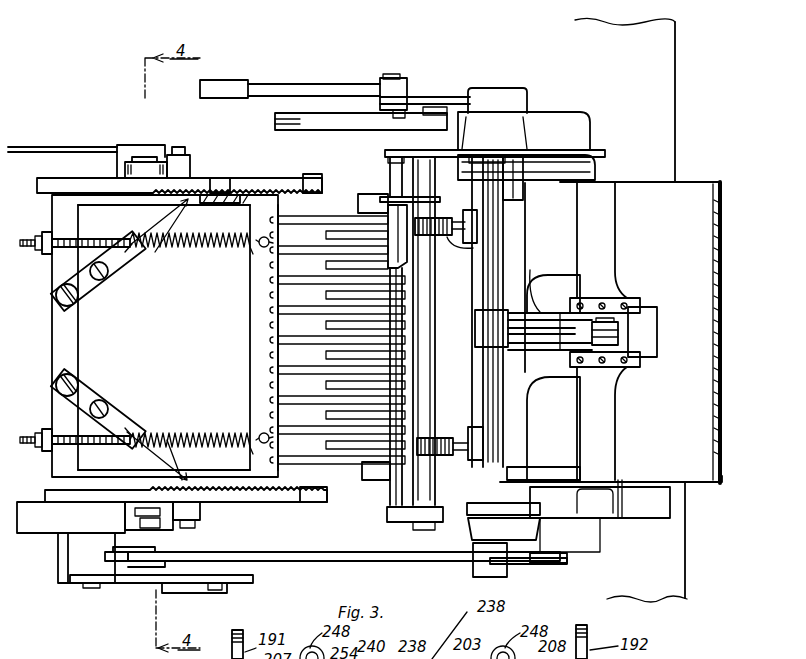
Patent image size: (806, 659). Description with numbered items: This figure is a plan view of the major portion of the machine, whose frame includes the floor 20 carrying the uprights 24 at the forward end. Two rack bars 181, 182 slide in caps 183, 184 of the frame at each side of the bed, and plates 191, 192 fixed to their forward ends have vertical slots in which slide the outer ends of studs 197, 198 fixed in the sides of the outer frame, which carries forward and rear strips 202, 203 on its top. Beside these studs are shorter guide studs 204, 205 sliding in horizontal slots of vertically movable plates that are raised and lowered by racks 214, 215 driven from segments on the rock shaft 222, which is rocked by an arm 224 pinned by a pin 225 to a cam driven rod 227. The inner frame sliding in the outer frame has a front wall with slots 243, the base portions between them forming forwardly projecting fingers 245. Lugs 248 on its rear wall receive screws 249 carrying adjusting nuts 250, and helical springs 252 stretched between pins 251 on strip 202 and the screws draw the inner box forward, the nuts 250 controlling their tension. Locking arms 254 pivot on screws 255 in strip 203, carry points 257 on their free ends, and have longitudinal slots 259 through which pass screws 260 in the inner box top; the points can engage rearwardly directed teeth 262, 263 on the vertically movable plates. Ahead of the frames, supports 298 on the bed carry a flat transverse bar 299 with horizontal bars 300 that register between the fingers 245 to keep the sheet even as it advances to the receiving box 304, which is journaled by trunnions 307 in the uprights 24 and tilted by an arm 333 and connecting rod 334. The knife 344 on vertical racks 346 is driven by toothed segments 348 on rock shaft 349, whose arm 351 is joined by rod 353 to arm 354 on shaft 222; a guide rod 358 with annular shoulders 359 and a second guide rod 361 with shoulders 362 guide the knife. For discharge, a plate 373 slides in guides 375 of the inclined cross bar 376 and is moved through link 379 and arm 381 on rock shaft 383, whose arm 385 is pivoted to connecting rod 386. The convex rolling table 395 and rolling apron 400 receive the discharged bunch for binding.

The floor 20 is at (668, 96).
The uprights 24 is at (553, 150).
The rack bar 181 is at (128, 155).
The rack bar 182 is at (135, 566).
The cap 183 is at (46, 124).
The cap 184 is at (58, 540).
The plate 191 is at (133, 512).
The plate 192 is at (127, 166).
The stud 197 is at (153, 527).
The stud 198 is at (143, 157).
The forward strip 202 is at (258, 298).
The rear strip 203 is at (75, 353).
The guide stud 204 is at (75, 488).
The guide stud 205 is at (70, 178).
The rack 214 is at (195, 510).
The rack 215 is at (183, 166).
The rock shaft 222 is at (120, 550).
The arm 224 is at (153, 584).
The pin 225 is at (218, 592).
The rod 227 is at (205, 590).
The slots 243 is at (284, 351).
The fingers 245 is at (326, 385).
The lugs 248 is at (48, 232).
The screws 249 is at (90, 252).
The adjusting nuts 250 is at (40, 250).
The pins 251 is at (264, 248).
The helical springs 252 is at (220, 252).
The arms 254 is at (78, 296).
The screws 255 is at (58, 305).
The points 257 is at (188, 204).
The longitudinal slots 259 is at (127, 255).
The screws 260 is at (108, 277).
The teeth 262 is at (277, 499).
The teeth 263 is at (303, 178).
The supports 298 is at (368, 207).
The flat transverse bar 299 is at (405, 304).
The horizontal bars 300 is at (330, 228).
The receiving box 304 is at (512, 434).
The trunnions 307 is at (525, 183).
The arm 333 is at (437, 110).
The connecting rod 334 is at (347, 118).
The knife 344 is at (410, 377).
The vertical racks 346 is at (430, 220).
The toothed segments 348 is at (478, 245).
The rock shaft 349 is at (480, 273).
The arm 351 is at (550, 565).
The rod 353 is at (385, 558).
The arm 354 is at (112, 556).
The transverse guide rod 358 is at (393, 173).
The annular shoulders 359 is at (383, 200).
The guide rod 361 is at (431, 322).
The shoulders 362 is at (432, 445).
The plate 373 is at (640, 335).
The guides 375 is at (620, 300).
The inclined cross bar 376 is at (603, 225).
The link 379 is at (615, 320).
The arm 381 is at (532, 322).
The rock shaft 383 is at (493, 218).
The arm 385 is at (470, 97).
The connecting rod 386 is at (277, 84).
The convex rolling table 395 is at (700, 486).
The rolling apron 400 is at (703, 270).